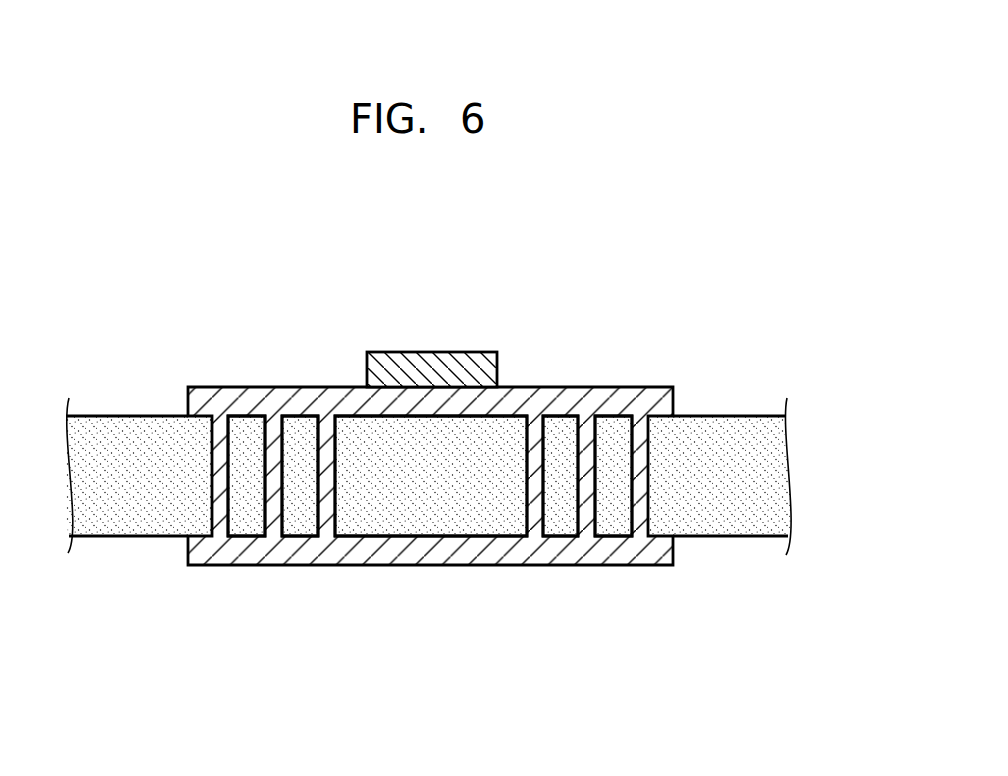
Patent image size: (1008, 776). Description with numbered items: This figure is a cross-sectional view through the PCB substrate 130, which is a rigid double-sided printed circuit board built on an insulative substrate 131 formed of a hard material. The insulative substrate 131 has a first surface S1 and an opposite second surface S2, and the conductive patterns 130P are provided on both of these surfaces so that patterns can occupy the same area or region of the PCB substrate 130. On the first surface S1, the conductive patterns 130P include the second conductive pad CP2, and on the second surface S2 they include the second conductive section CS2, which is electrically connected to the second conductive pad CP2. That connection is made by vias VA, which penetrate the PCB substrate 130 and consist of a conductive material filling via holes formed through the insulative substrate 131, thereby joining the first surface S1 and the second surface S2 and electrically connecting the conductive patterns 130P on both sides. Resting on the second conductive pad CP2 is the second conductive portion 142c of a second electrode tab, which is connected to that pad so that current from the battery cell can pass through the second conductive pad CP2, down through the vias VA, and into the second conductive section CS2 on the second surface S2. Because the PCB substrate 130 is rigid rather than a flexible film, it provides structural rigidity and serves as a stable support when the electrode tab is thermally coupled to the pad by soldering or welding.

The PCB substrate 130 is at (138, 556).
The insulative substrate 131 is at (777, 478).
The conductive patterns 130P is at (655, 270).
The second conductive portion 142c is at (450, 363).
The via VA is at (577, 447).
The second conductive pad CP2 is at (627, 400).
The second conductive section CS2 is at (562, 552).
The first surface S1 is at (744, 416).
The second surface S2 is at (715, 536).